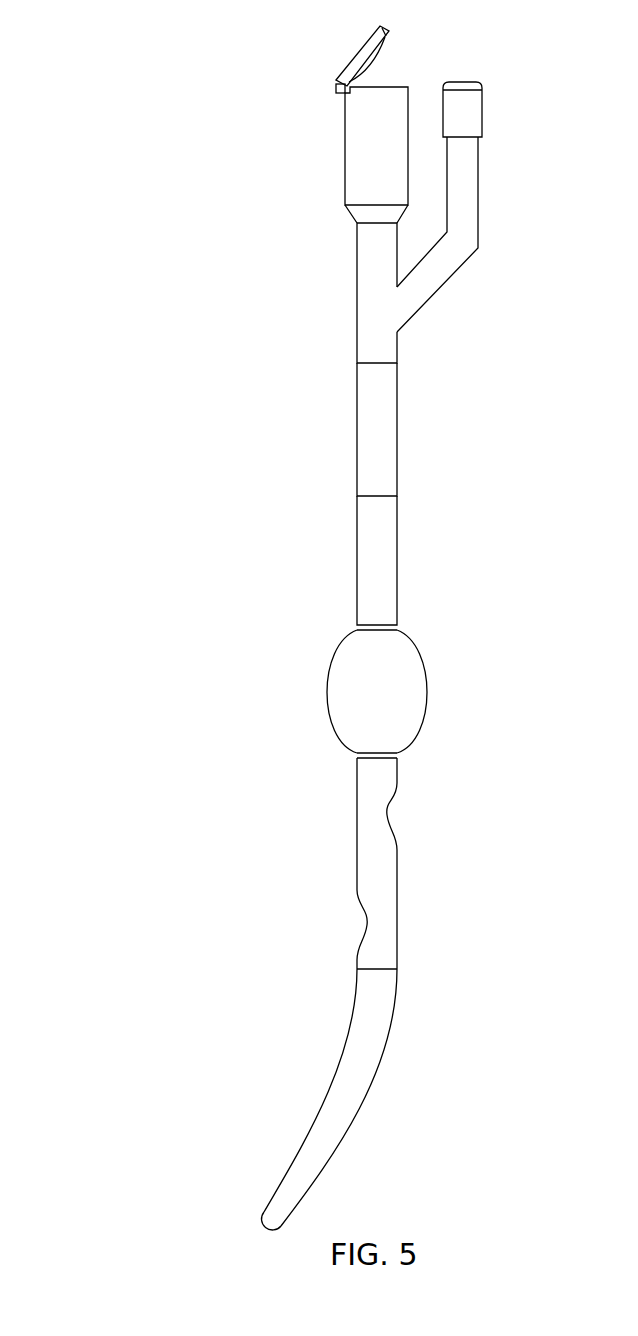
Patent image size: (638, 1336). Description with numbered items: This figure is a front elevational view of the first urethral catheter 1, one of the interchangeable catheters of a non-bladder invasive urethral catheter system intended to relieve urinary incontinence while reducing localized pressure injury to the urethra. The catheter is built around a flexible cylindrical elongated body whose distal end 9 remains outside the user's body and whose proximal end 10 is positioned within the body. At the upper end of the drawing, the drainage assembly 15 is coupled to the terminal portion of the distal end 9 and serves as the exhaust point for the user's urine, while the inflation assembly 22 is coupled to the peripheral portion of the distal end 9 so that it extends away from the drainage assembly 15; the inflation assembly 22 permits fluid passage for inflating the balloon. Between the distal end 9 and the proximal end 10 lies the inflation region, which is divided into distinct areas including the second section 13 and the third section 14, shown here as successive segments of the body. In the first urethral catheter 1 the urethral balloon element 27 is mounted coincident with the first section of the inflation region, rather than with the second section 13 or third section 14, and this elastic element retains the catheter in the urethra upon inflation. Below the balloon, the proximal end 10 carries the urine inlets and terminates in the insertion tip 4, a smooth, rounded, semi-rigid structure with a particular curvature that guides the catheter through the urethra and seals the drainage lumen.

The first urethral catheter 1 is at (236, 696).
The insertion tip 4 is at (387, 1015).
The distal end 9 is at (388, 328).
The proximal end 10 is at (393, 881).
The second section 13 is at (393, 453).
The third section 14 is at (393, 582).
The drainage assembly 15 is at (393, 163).
The inflation assembly 22 is at (477, 250).
The urethral balloon element 27 is at (393, 710).